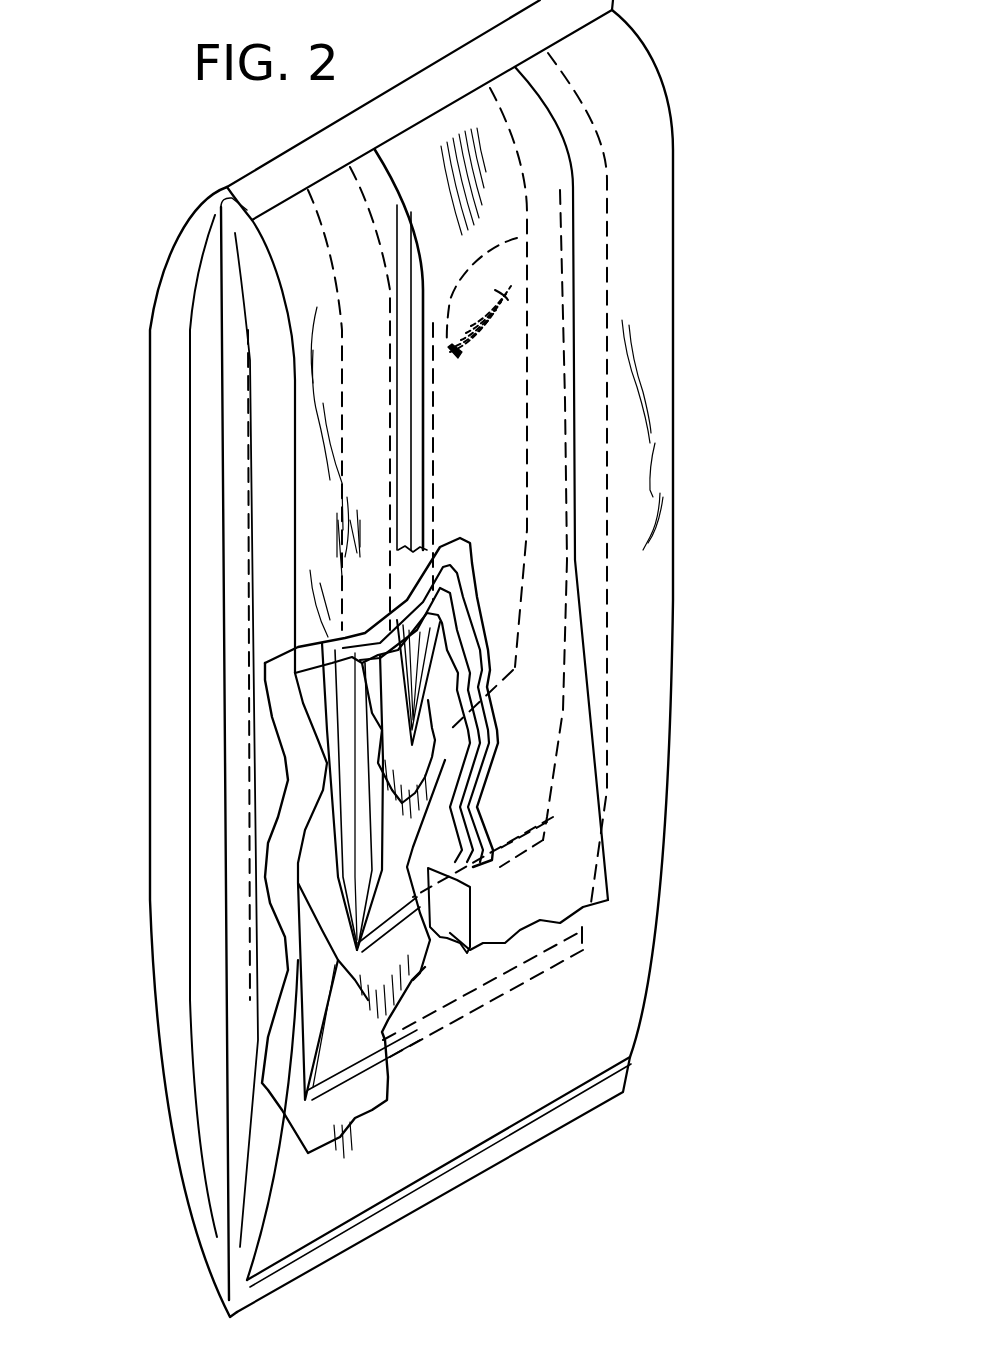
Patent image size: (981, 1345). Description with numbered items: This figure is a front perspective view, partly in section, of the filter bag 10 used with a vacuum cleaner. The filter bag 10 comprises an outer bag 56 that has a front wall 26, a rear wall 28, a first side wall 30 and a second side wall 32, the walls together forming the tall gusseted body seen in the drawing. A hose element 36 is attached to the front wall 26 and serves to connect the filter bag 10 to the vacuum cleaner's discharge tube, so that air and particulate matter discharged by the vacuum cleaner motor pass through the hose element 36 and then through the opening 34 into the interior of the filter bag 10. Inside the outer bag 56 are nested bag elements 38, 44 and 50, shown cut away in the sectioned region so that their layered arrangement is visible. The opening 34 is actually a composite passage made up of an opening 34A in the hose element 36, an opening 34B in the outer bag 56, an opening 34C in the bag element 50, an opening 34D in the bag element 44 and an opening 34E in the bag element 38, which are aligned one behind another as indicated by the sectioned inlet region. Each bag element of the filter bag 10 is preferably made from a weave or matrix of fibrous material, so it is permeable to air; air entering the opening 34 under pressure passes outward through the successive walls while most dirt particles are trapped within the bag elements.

The filter bag 10 is at (717, 172).
The front wall 26 is at (655, 655).
The rear wall 28 is at (148, 512).
The first side wall 30 is at (167, 712).
The second side wall 32 is at (675, 398).
The opening 34 is at (483, 283).
The opening in hose element 34A is at (463, 347).
The opening in outer bag 34B is at (517, 316).
The opening in bag element 50 34C is at (527, 308).
The opening in bag element 44 34D is at (520, 297).
The opening in bag element 38 34E is at (515, 282).
The hose element 36 is at (578, 802).
The bag element 38 is at (398, 695).
The bag element 44 is at (337, 853).
The bag element 50 is at (283, 1040).
The outer bag 56 is at (635, 993).